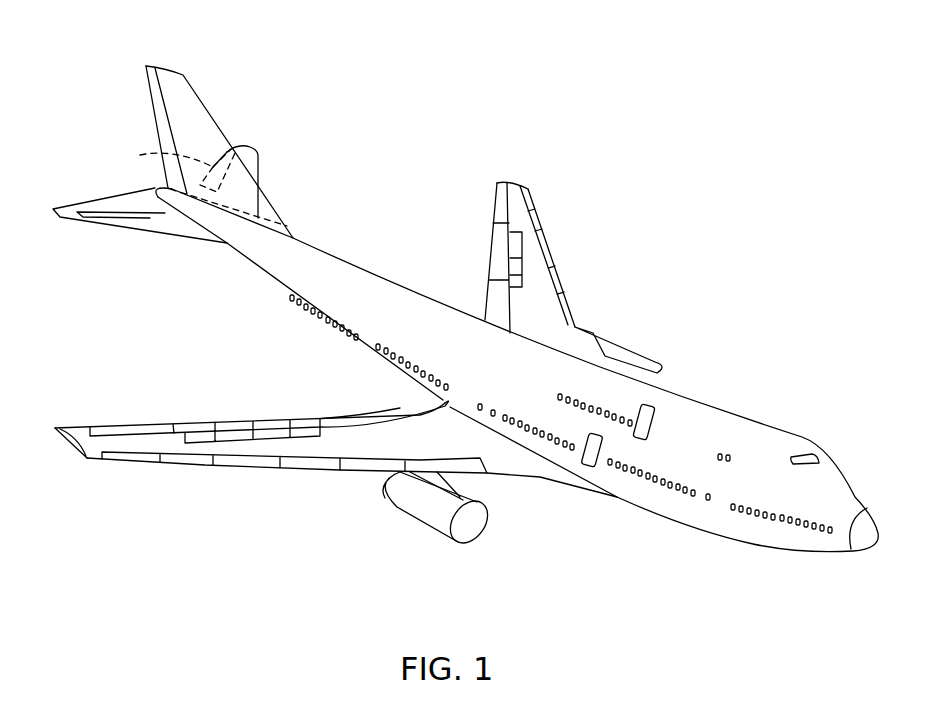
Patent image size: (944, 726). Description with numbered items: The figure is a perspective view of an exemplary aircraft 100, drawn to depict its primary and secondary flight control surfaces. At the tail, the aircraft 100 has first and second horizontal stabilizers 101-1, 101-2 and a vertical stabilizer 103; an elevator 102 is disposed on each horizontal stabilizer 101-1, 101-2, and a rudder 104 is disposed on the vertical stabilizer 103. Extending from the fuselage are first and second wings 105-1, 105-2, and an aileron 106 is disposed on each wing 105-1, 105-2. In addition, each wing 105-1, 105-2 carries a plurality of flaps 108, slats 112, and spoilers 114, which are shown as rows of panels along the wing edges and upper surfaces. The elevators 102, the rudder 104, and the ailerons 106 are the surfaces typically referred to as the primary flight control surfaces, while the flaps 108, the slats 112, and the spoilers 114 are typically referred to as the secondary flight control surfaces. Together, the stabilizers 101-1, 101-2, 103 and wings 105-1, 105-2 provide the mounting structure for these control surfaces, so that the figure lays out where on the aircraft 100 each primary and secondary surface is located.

The aircraft 100 is at (621, 111).
The first horizontal stabilizer 101-1 is at (128, 234).
The second horizontal stabilizer 101-2 is at (262, 165).
The elevator 102 is at (96, 206).
The vertical stabilizer 103 is at (207, 108).
The rudder 104 is at (158, 89).
The first wing 105-1 is at (513, 463).
The second wing 105-2 is at (590, 344).
The aileron 106 is at (125, 425).
The flaps 108 is at (351, 410).
The slats 112 is at (364, 470).
The spoilers 114 is at (235, 437).